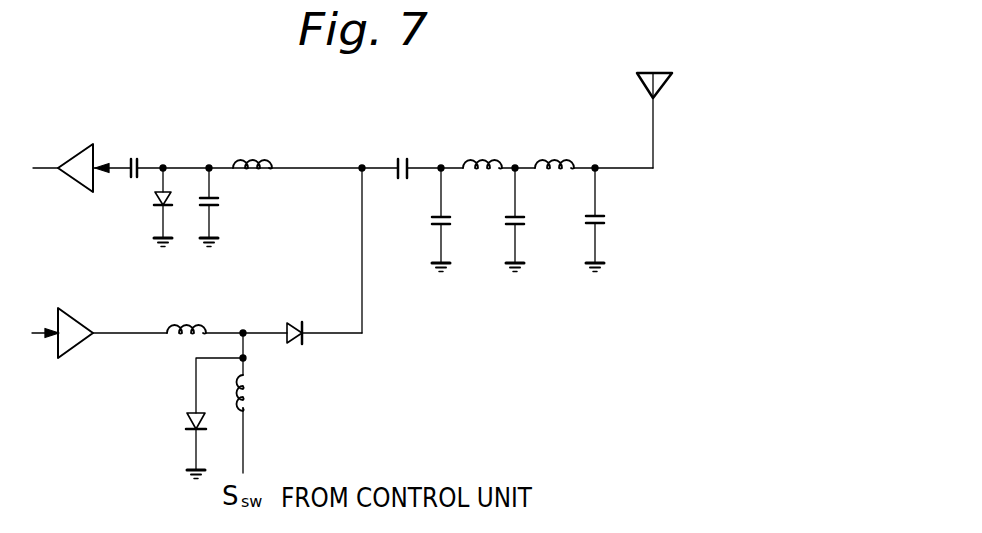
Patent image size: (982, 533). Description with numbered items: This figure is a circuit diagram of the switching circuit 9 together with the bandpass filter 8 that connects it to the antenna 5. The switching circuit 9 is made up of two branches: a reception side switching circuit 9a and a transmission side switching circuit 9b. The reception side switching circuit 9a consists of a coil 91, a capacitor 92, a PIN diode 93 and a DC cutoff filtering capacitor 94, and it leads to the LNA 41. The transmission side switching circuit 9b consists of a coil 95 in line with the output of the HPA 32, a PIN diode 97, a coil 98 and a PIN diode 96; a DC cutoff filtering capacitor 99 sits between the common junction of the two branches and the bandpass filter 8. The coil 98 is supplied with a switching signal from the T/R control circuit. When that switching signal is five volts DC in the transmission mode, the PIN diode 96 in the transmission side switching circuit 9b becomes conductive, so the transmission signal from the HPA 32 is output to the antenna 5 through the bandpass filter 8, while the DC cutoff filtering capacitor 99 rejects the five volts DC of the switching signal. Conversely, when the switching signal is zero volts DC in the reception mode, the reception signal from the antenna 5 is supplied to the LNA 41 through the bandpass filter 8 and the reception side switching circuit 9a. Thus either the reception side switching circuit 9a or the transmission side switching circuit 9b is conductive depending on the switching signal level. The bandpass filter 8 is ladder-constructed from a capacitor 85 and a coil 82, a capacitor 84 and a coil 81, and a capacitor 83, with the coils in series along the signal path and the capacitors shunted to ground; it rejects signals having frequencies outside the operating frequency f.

The antenna 5 is at (658, 73).
The bandpass filter 8 is at (539, 92).
The switching circuit 9 is at (270, 89).
The reception side switching circuit 9a is at (332, 226).
The transmission side switching circuit 9b is at (358, 430).
The HPA 32 is at (78, 322).
The LNA 41 is at (73, 148).
The coil 81 is at (483, 157).
The coil 82 is at (558, 157).
The capacitor 83 is at (432, 219).
The capacitor 84 is at (506, 219).
The capacitor 85 is at (585, 219).
The coil 91 is at (255, 156).
The capacitor 92 is at (223, 203).
The PIN diode 93 is at (153, 202).
The DC cutoff filtering capacitor 94 is at (139, 154).
The coil 95 is at (194, 322).
The PIN diode 96 is at (296, 322).
The PIN diode 97 is at (187, 421).
The coil 98 is at (254, 396).
The DC cutoff filtering capacitor 99 is at (402, 157).